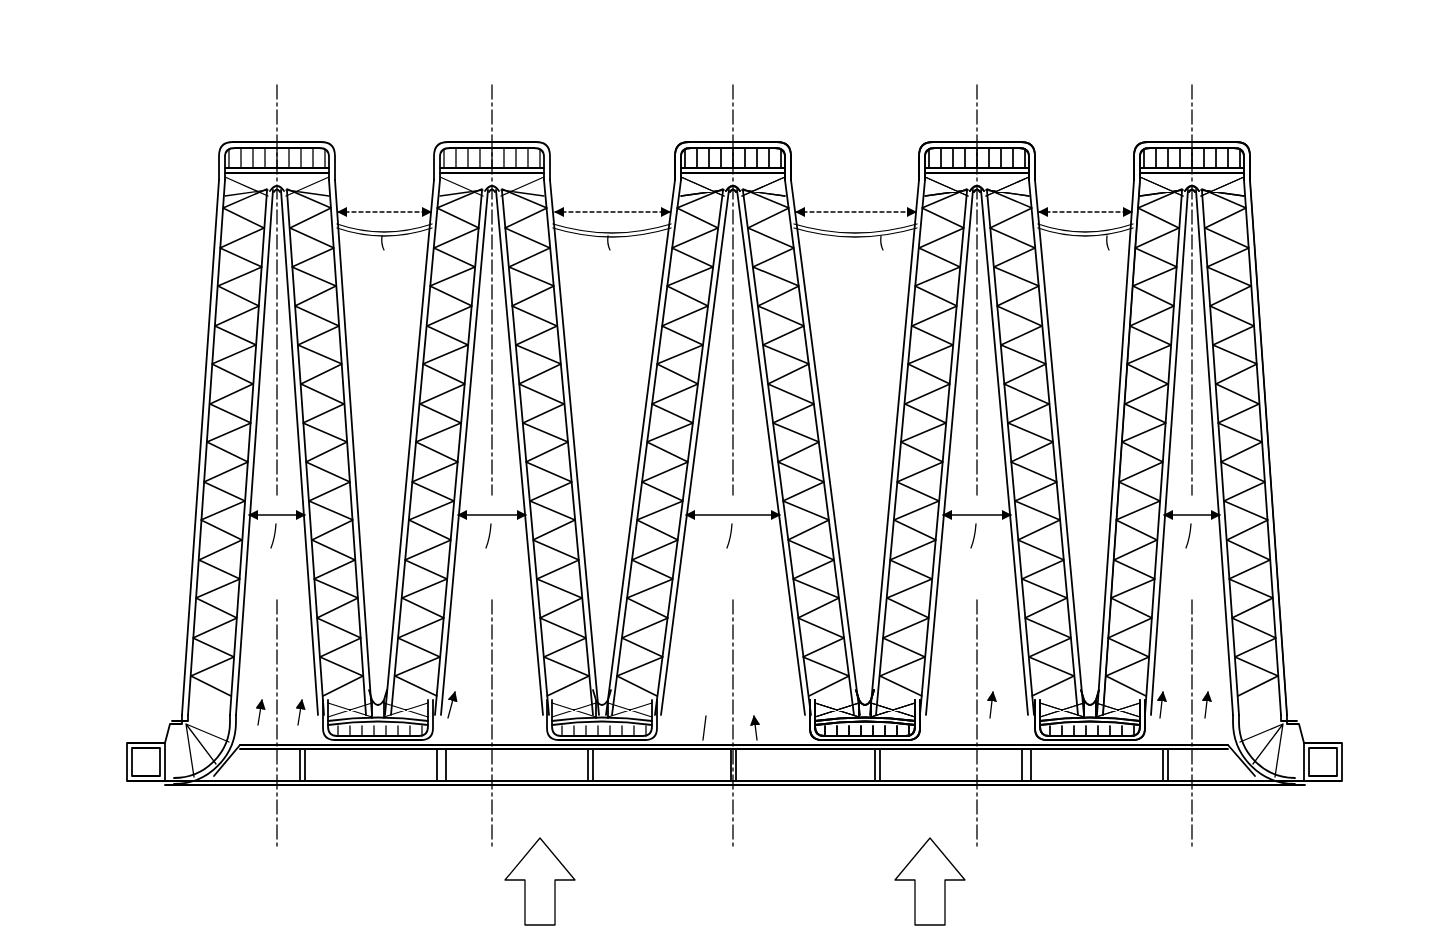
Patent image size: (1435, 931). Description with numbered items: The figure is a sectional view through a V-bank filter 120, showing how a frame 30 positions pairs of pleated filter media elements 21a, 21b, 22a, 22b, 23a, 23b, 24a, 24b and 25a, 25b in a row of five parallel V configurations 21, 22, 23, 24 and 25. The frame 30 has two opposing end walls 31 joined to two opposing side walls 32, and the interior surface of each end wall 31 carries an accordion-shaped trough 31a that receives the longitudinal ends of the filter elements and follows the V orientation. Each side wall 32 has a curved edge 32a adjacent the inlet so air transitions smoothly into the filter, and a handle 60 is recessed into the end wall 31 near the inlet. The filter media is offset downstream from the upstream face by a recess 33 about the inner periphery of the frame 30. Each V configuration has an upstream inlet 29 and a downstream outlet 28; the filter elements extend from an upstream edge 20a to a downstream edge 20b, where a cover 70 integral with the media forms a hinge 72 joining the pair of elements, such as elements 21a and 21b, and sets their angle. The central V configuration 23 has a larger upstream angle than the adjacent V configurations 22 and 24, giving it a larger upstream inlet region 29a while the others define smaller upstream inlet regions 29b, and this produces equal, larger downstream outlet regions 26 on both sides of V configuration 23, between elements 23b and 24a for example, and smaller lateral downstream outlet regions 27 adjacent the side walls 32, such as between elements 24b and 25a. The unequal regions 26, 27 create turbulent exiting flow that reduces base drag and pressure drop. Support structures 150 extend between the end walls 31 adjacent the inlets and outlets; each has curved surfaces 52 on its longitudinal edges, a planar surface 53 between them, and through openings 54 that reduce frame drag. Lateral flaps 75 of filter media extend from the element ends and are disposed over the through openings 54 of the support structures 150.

The V-bank filter 120 is at (1355, 340).
The upstream edge 20a is at (597, 790).
The downstream edge 20b is at (735, 146).
The V configuration 21 is at (277, 487).
The filter media element 21a is at (237, 152).
The filter media element 21b is at (308, 150).
The V configuration 22 is at (492, 467).
The filter media element 22a is at (450, 152).
The filter media element 22b is at (533, 152).
The V configuration 23 is at (733, 467).
The filter media element 23a is at (690, 170).
The filter media element 23b is at (786, 174).
The V configuration 24 is at (981, 467).
The filter media element 24a is at (925, 174).
The filter media element 24b is at (1033, 174).
The V configuration 25 is at (1209, 467).
The filter media element 25a is at (1150, 152).
The filter media element 25b is at (1251, 176).
The downstream outlet region 26 is at (625, 118).
The downstream outlet region 27 is at (372, 118).
The downstream outlet 28 is at (203, 412).
The upstream inlet 29 is at (240, 640).
The upstream inlet region 29a is at (765, 760).
The upstream inlet region 29b is at (300, 787).
The frame 30 is at (1352, 765).
The end wall 31 is at (1240, 650).
The trough 31a is at (1150, 680).
The side wall 32 is at (172, 738).
The curved edge 32a is at (220, 787).
The recess 33 is at (690, 775).
The curved surface 52 is at (935, 148).
The planar surface 53 is at (1180, 143).
The through opening 54 is at (983, 142).
The handle 60 is at (530, 762).
The cover 70 is at (752, 144).
The hinge 72 is at (264, 146).
The flap 75 is at (365, 742).
The support structure 150 is at (956, 100).